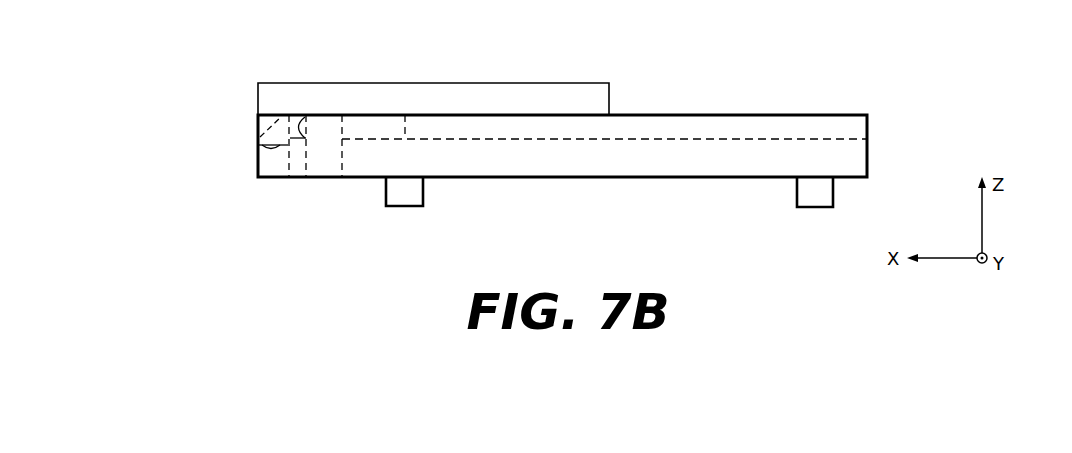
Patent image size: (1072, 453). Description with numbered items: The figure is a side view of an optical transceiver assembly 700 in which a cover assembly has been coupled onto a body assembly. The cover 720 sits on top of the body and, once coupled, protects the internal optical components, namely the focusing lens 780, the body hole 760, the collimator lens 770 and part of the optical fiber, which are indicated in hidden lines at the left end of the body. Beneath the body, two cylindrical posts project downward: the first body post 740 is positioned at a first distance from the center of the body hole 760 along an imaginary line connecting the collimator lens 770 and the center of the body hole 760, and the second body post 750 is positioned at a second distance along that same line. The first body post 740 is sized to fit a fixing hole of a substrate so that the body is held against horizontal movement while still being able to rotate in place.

The semiconductor package 700 is at (536, 49).
The cover 720 is at (611, 98).
The first body post 740 is at (405, 208).
The second body post 750 is at (814, 210).
The body hole 760 is at (327, 158).
The collimator lens 770 is at (271, 150).
The focusing lens 780 is at (300, 138).